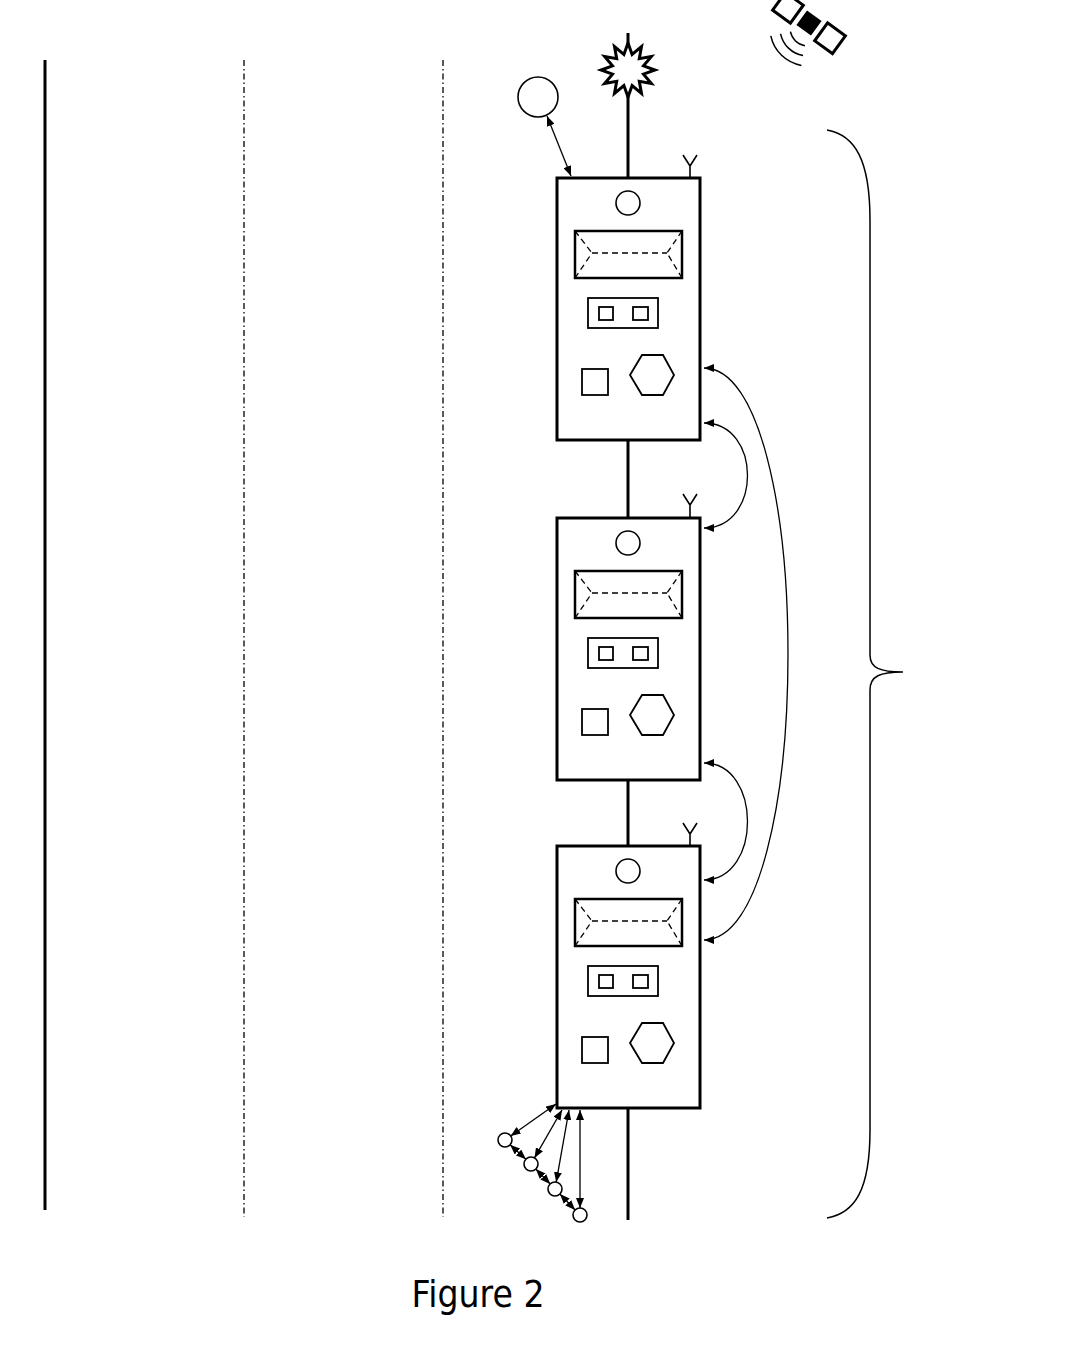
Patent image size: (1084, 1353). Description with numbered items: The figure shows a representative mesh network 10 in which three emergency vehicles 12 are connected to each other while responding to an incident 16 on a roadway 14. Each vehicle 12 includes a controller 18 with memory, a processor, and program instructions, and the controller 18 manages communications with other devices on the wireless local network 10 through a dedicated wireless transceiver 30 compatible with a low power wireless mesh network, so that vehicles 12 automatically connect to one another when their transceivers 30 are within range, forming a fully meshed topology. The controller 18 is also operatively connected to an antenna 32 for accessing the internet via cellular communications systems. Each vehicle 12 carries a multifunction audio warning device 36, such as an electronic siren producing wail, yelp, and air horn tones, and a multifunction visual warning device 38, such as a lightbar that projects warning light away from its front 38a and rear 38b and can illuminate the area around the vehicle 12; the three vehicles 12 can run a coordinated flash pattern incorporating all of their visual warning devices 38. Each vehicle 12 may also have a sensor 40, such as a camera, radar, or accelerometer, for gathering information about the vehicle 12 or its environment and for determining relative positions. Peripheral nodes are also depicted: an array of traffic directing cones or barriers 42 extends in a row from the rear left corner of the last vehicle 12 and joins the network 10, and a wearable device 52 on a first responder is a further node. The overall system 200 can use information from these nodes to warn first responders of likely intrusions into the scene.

The wireless local network 10 is at (758, 207).
The emergency vehicle 12 is at (703, 278).
The roadway 14 is at (364, 158).
The incident 16 is at (641, 53).
The controller 18 is at (588, 305).
The wireless transceiver 30 is at (673, 366).
The antenna 32 is at (699, 158).
The multifunction audio warning device 36 is at (582, 381).
The multifunction visual warning device 38 is at (576, 253).
The front of the lightbar 38a is at (607, 241).
The rear of the lightbar 38b is at (607, 267).
The sensor 40 is at (641, 202).
The traffic directing cones or barriers 42 is at (498, 1134).
The wearable device 52 is at (530, 78).
The system 200 is at (895, 674).